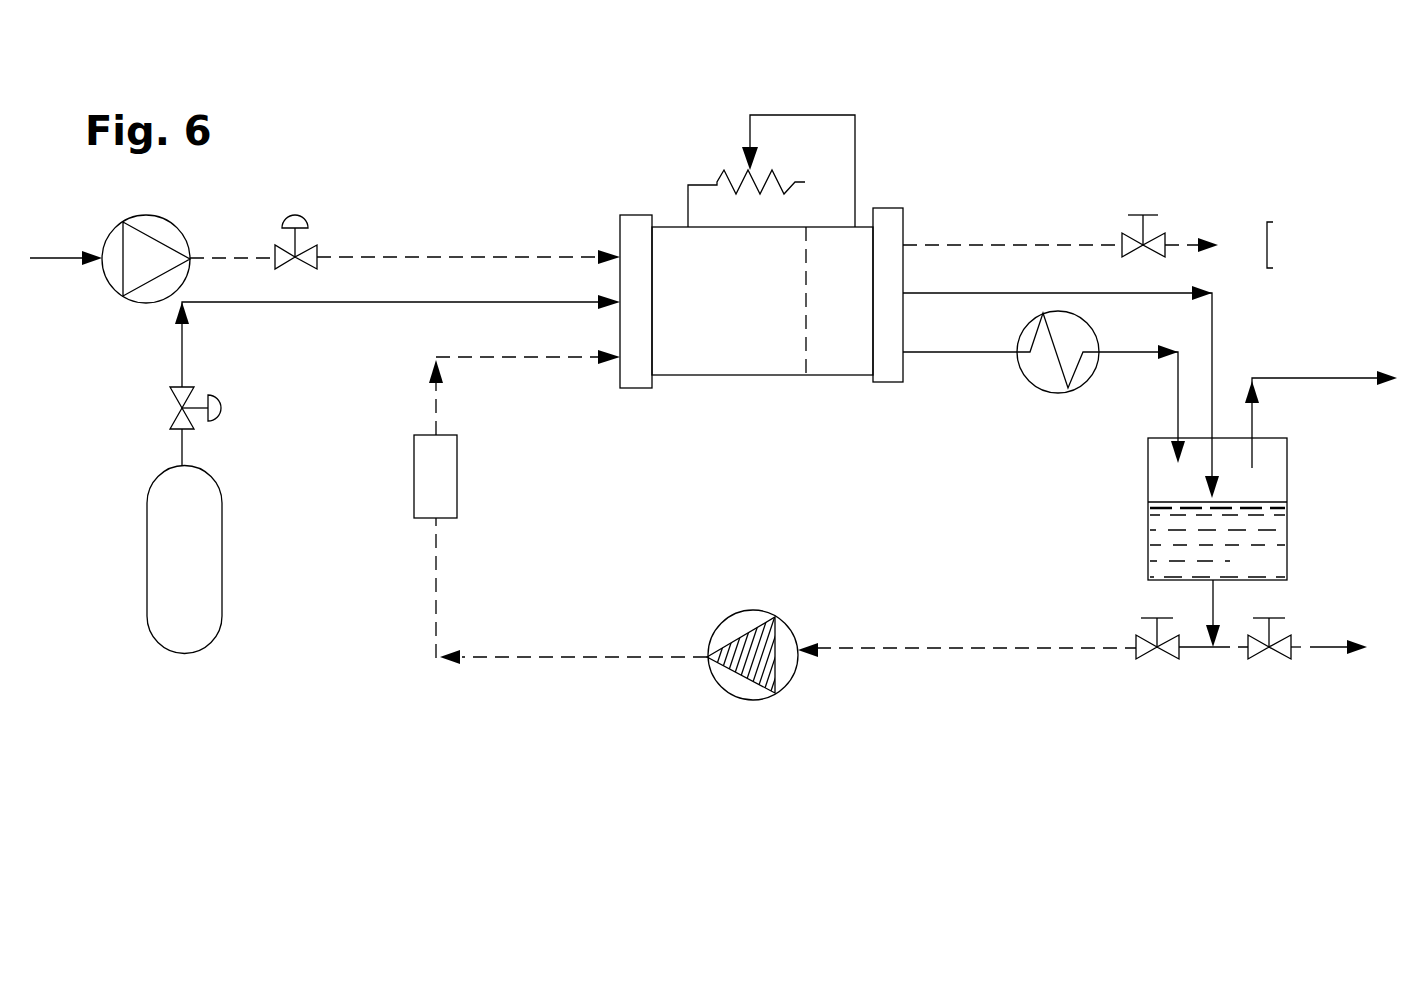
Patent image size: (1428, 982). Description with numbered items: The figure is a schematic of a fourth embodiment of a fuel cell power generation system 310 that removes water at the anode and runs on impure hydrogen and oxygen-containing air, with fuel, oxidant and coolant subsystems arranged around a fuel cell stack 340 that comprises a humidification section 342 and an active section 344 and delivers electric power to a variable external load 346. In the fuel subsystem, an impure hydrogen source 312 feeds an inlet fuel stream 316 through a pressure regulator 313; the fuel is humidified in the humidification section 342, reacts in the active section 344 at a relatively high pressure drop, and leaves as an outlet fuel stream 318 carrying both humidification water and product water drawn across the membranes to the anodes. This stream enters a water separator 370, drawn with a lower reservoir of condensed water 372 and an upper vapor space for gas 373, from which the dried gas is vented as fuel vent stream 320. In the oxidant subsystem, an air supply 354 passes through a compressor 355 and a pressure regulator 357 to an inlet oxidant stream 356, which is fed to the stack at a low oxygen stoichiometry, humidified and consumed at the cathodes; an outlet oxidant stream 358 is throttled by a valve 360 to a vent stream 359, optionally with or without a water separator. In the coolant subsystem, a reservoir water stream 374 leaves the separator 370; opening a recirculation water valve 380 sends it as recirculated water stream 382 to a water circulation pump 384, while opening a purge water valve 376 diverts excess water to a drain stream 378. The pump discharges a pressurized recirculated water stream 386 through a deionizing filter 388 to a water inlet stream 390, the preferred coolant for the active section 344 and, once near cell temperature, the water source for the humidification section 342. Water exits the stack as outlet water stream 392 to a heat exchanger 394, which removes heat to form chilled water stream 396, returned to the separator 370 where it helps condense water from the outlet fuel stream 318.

The fuel cell power generation system 310 is at (305, 180).
The impure hydrogen source 312 is at (222, 600).
The pressure regulator 313 is at (193, 388).
The inlet fuel stream 316 is at (415, 305).
The outlet fuel stream 318 is at (1127, 295).
The vent stream 320 is at (1256, 418).
The fuel cell stack 340 is at (648, 200).
The humidification section 342 is at (688, 372).
The active section 344 is at (826, 372).
The variable external load 346 is at (880, 140).
The air supply 354 is at (60, 262).
The compressor 355 is at (148, 214).
The inlet oxidant stream 356 is at (479, 250).
The pressure regulator 357 is at (296, 213).
The outlet oxidant stream 358 is at (980, 243).
The vent stream 359 is at (1193, 240).
The valve 360 is at (1124, 232).
The water separator 370 is at (1120, 505).
The water in separator 372 is at (1278, 536).
The gas in separator 373 is at (1289, 478).
The reservoir water stream 374 is at (1218, 598).
The purge water valve 376 is at (1283, 661).
The drain stream 378 is at (1313, 640).
The recirculation water valve 380 is at (1172, 661).
The recirculated water stream 382 is at (952, 651).
The water circulation pump 384 is at (712, 634).
The pressurized recirculated water stream 386 is at (509, 661).
The deionizing filter 388 is at (447, 467).
The water inlet stream 390 is at (594, 354).
The water outlet line 392 is at (935, 356).
The heat exchanger 394 is at (1020, 366).
The water return line to separator 396 is at (1176, 400).